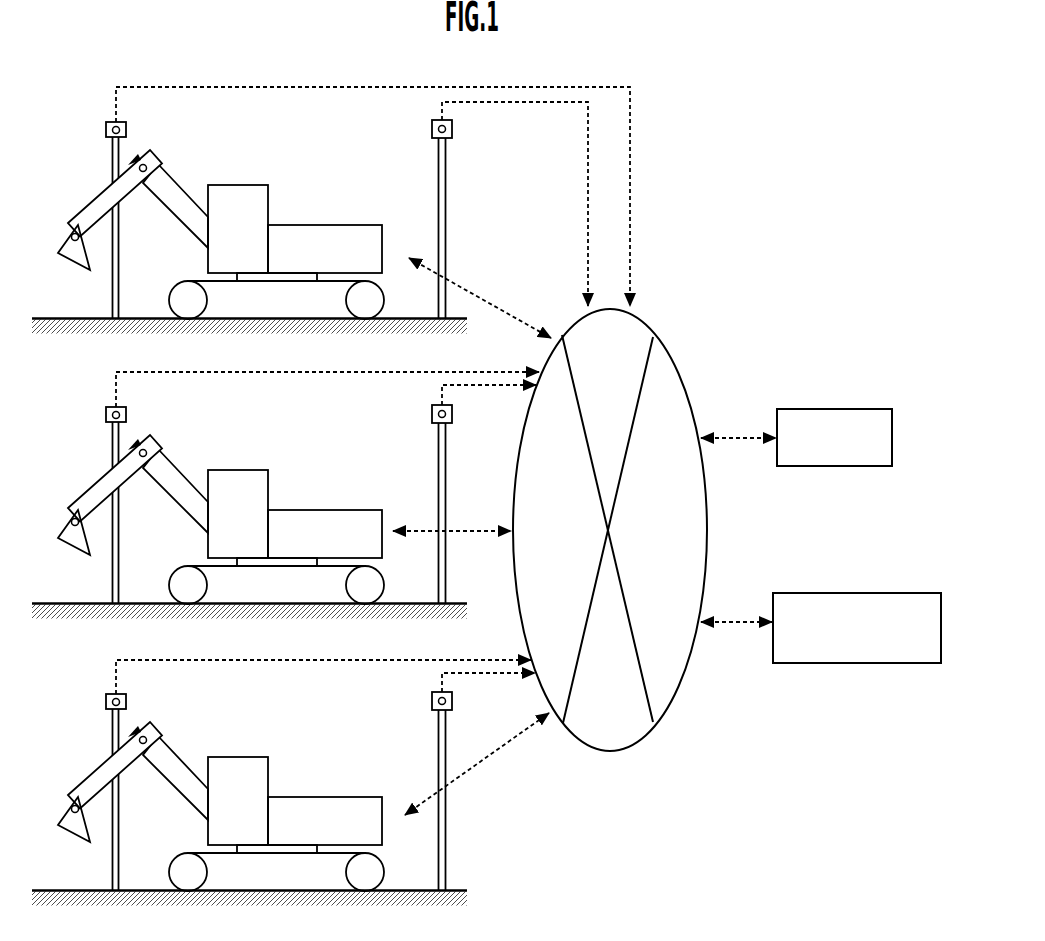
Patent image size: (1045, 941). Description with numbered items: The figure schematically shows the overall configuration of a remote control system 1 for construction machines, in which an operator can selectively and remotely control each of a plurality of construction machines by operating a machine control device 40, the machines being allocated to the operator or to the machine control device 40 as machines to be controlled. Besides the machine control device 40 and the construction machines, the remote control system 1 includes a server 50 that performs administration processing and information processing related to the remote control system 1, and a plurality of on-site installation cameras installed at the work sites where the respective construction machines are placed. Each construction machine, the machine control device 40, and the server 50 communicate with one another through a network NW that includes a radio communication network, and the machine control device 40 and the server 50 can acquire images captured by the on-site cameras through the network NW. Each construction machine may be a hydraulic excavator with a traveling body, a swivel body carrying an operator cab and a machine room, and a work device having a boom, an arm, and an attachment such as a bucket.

The remote control system 1 is at (770, 99).
The network NW is at (663, 342).
The server 50 is at (820, 409).
The machine control device 40 is at (846, 593).